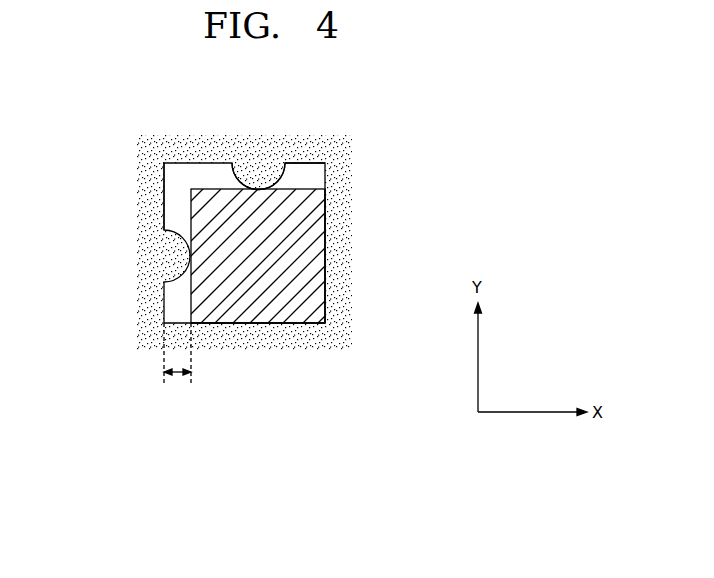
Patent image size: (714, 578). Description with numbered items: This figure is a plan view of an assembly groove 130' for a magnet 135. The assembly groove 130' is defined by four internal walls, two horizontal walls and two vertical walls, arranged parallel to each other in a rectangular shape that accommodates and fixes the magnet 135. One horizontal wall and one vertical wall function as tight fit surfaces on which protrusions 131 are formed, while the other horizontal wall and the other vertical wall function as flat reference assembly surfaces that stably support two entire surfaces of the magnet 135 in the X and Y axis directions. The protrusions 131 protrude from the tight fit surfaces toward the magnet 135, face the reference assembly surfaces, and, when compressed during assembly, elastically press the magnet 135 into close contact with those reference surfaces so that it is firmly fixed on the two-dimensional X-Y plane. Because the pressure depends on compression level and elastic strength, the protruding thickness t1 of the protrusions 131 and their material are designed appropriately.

The assembly groove 130' is at (244, 205).
The protrusions 131 is at (240, 174).
The magnet 135 is at (313, 225).
The protruding thickness t1 is at (177, 362).